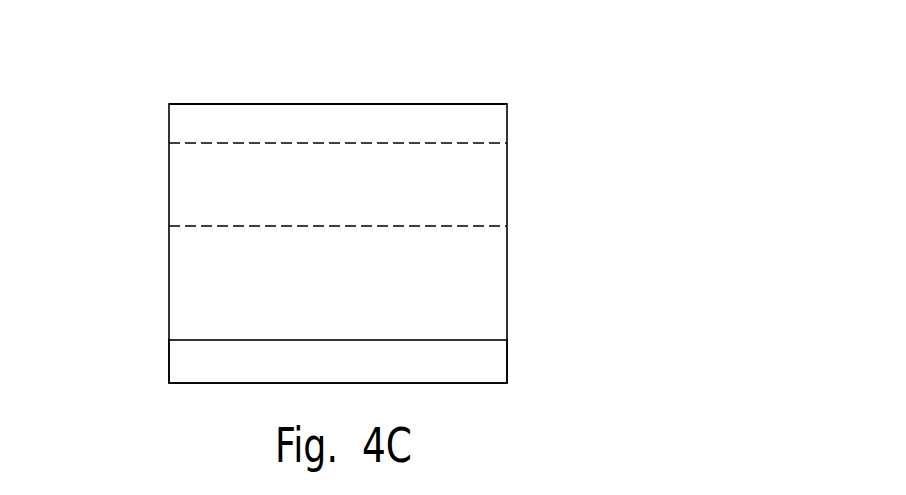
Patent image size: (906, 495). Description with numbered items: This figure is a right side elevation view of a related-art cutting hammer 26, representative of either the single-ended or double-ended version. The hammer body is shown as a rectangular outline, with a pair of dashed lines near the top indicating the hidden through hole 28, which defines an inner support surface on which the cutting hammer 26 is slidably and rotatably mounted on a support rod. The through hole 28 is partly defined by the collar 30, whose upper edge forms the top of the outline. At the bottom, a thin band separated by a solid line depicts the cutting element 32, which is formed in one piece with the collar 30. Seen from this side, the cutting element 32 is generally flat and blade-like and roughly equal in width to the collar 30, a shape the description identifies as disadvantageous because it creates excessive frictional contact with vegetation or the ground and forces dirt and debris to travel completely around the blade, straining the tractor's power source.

The cutting hammer 26 is at (558, 181).
The collar 30 is at (474, 104).
The through hole 28 is at (222, 142).
The cutting element 32 is at (487, 364).